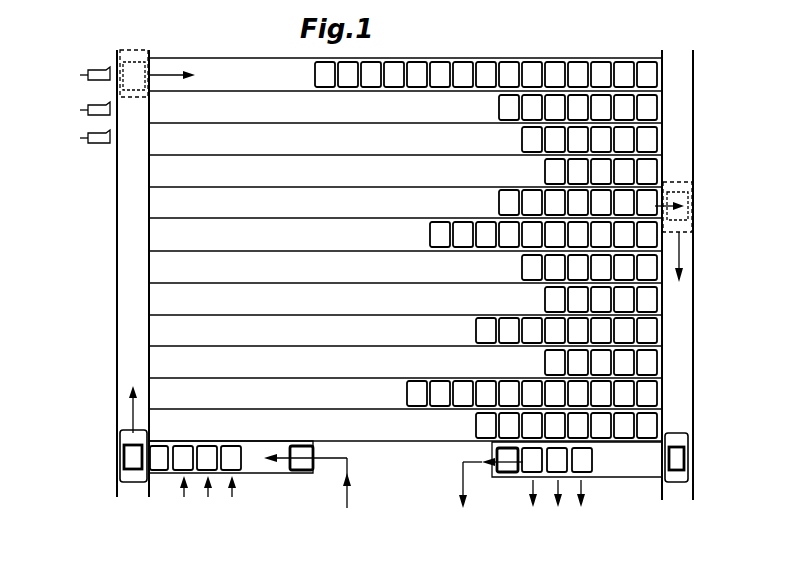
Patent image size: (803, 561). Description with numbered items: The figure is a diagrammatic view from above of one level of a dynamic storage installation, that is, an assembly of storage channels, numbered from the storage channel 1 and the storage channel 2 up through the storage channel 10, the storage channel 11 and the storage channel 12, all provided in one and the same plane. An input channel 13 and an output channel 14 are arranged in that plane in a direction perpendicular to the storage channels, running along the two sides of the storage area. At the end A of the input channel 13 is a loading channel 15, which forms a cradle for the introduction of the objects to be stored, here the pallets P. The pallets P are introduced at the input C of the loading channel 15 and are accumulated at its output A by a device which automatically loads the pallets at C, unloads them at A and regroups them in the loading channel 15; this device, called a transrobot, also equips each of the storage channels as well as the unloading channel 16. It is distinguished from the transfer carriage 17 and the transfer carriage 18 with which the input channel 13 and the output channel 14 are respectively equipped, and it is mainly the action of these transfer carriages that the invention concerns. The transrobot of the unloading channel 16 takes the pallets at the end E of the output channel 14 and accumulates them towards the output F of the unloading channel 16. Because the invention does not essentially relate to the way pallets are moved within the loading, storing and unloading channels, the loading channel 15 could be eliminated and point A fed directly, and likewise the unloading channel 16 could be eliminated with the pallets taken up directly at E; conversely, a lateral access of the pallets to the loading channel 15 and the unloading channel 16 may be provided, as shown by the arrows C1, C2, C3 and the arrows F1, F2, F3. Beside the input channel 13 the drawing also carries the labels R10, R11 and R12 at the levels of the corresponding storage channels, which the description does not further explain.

The storage channel 1 is at (167, 423).
The storage channel 2 is at (167, 394).
The storage channel 10 is at (175, 143).
The storage channel 11 is at (166, 108).
The storage channel 12 is at (215, 72).
The input channel 13 is at (128, 302).
The output channel 14 is at (678, 133).
The loading channel 15 is at (263, 467).
The unloading channel 16 is at (624, 462).
The transfer carriage 17 is at (133, 478).
The transfer carriage 18 is at (690, 230).
The end of input channel A is at (133, 457).
The end of output channel E is at (686, 460).
The pallet P is at (394, 72).
The input of loading channel C is at (313, 481).
The lateral access arrow C1 is at (184, 501).
The lateral access arrow C2 is at (208, 501).
The lateral access arrow C3 is at (232, 501).
The output of unloading channel F is at (491, 475).
The lateral access arrow F1 is at (534, 504).
The lateral access arrow F2 is at (559, 504).
The lateral access arrow F3 is at (582, 504).
The track selector relay 10 R10 is at (79, 137).
The track selector relay 11 R11 is at (79, 109).
The track selector relay 12 R12 is at (121, 73).